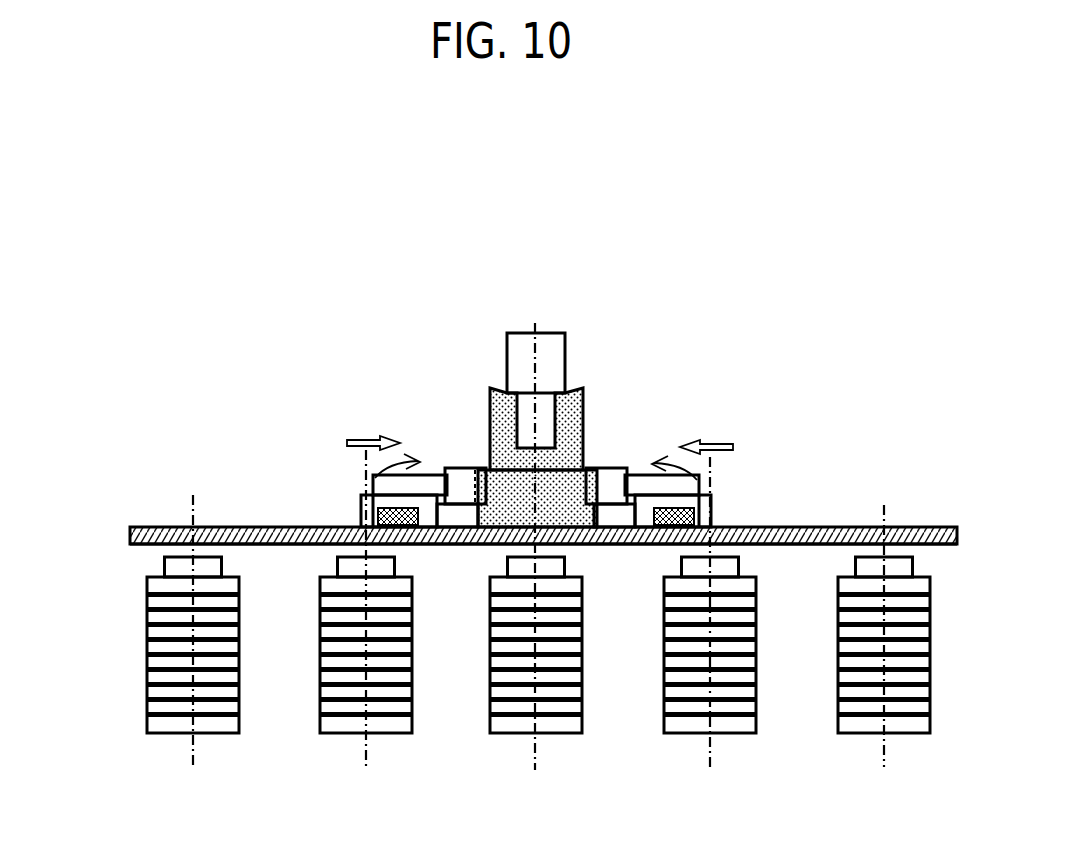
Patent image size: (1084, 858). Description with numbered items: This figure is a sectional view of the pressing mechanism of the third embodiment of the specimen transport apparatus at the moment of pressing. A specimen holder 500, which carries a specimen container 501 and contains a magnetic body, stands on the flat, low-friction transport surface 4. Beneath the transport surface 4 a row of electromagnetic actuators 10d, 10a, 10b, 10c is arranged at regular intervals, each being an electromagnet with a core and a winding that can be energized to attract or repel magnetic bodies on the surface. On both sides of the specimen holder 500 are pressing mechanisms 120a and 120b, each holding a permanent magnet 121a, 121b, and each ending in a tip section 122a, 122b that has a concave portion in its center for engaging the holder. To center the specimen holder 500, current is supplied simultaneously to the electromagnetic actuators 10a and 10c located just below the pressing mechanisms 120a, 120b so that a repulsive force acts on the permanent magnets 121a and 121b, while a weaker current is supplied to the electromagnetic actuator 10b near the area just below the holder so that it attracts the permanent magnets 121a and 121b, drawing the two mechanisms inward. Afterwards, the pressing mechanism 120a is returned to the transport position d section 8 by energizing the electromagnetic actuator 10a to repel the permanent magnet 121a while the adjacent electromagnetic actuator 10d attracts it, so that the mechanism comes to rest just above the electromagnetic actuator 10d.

The transport surface 4 is at (130, 538).
The transport position d section 8 is at (173, 527).
The electromagnetic actuator 10a is at (337, 733).
The electromagnetic actuator 10b is at (527, 733).
The electromagnetic actuator 10c is at (695, 733).
The electromagnetic actuator 10d is at (173, 733).
The pressing mechanism 120a is at (363, 485).
The pressing mechanism 120b is at (710, 482).
The permanent magnet 121a is at (412, 520).
The permanent magnet 121b is at (660, 518).
The tip section 122a is at (460, 468).
The tip section 122b is at (618, 468).
The specimen holder 500 is at (492, 386).
The specimen container 501 is at (550, 333).